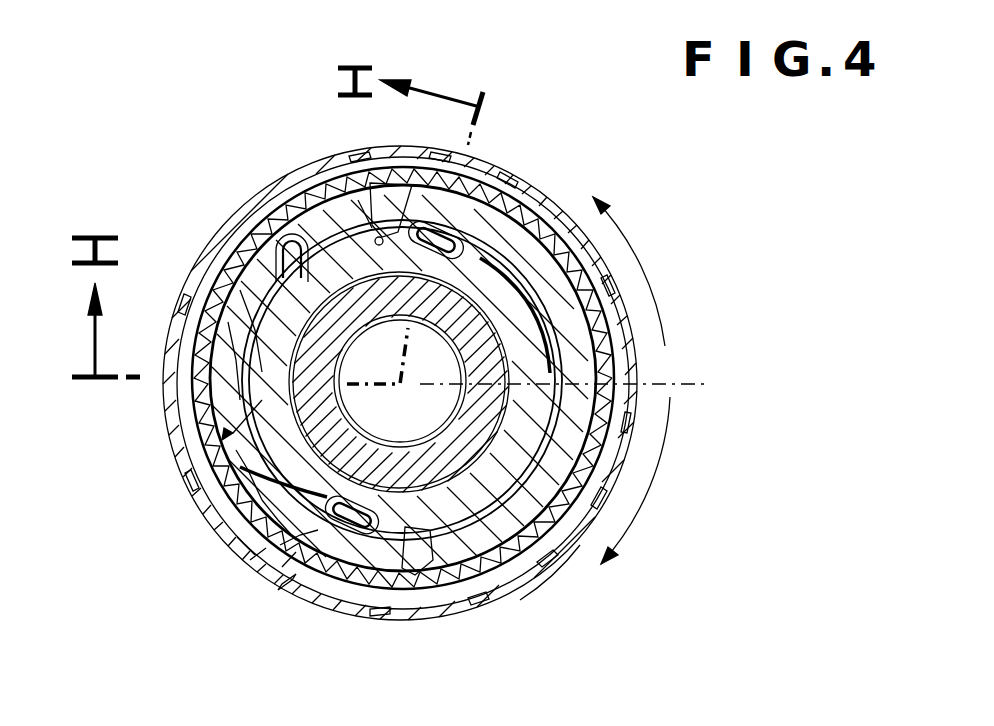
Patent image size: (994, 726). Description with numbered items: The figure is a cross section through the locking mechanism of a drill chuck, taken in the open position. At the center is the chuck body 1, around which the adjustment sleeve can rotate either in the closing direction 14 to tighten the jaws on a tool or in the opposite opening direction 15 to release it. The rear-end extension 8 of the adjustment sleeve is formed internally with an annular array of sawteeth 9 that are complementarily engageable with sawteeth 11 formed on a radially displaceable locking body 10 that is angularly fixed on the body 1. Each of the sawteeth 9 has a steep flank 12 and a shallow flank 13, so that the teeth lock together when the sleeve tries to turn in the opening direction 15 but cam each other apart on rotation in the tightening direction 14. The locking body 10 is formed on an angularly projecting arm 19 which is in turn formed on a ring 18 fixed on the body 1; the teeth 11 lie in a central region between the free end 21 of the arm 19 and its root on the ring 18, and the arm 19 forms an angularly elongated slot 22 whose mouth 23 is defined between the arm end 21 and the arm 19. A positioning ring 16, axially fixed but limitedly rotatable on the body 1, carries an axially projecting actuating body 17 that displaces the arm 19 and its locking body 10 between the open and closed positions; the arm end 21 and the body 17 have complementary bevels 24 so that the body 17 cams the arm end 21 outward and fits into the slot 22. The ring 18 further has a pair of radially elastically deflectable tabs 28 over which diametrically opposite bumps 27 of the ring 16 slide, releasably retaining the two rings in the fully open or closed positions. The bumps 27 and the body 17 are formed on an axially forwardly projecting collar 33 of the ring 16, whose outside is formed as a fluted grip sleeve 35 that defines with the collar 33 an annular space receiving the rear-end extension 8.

The body 1 is at (520, 327).
The rear-end extension 8 is at (217, 523).
The sawteeth 9 is at (200, 490).
The locking body 10 is at (187, 453).
The sawteeth 11 is at (180, 425).
The steep flank 12 is at (265, 250).
The shallow flank 13 is at (235, 290).
The closing direction 14 is at (662, 317).
The opening direction 15 is at (647, 495).
The positioning ring 16 is at (546, 566).
The actuating body 17 is at (317, 530).
The ring 18 is at (578, 243).
The arm 19 is at (228, 320).
The free end 21 is at (237, 537).
The slot 22 is at (265, 260).
The mouth 23 is at (280, 545).
The bevels 24 is at (250, 560).
The bumps 27 is at (465, 175).
The tabs 28 is at (510, 172).
The collar 33 is at (572, 358).
The sleeve 35 is at (540, 197).